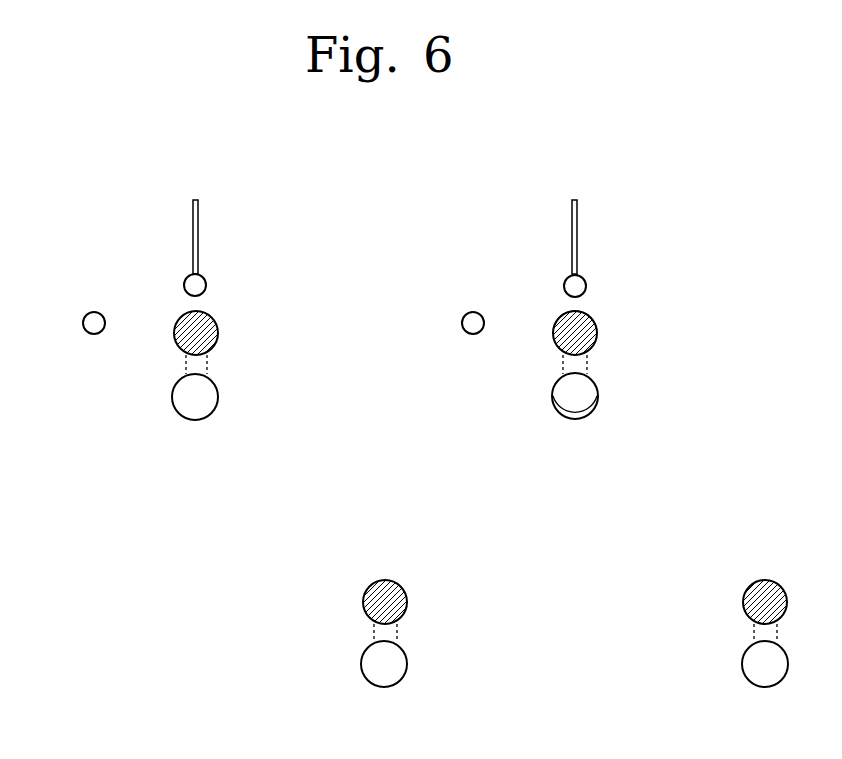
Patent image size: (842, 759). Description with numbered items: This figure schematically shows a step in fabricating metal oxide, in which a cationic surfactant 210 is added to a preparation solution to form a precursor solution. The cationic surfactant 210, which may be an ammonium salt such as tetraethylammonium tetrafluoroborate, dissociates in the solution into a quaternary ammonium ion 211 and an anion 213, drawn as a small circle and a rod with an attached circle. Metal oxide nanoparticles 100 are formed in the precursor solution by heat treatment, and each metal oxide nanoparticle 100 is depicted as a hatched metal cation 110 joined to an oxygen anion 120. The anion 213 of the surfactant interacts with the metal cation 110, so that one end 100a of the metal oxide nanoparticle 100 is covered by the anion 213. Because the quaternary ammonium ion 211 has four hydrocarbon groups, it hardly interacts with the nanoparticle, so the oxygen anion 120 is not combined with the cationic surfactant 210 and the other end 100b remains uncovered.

The metal oxide nanoparticle 100 is at (687, 322).
The one end of the metal oxide nanoparticle 100a is at (586, 314).
The other end of the metal oxide nanoparticle 100b is at (583, 417).
The metal cation 110 is at (597, 331).
The oxygen anion 120 is at (590, 398).
The cationic surfactant 210 is at (84, 222).
The quaternary ammonium ion 211 is at (95, 313).
The anion 213 is at (192, 228).